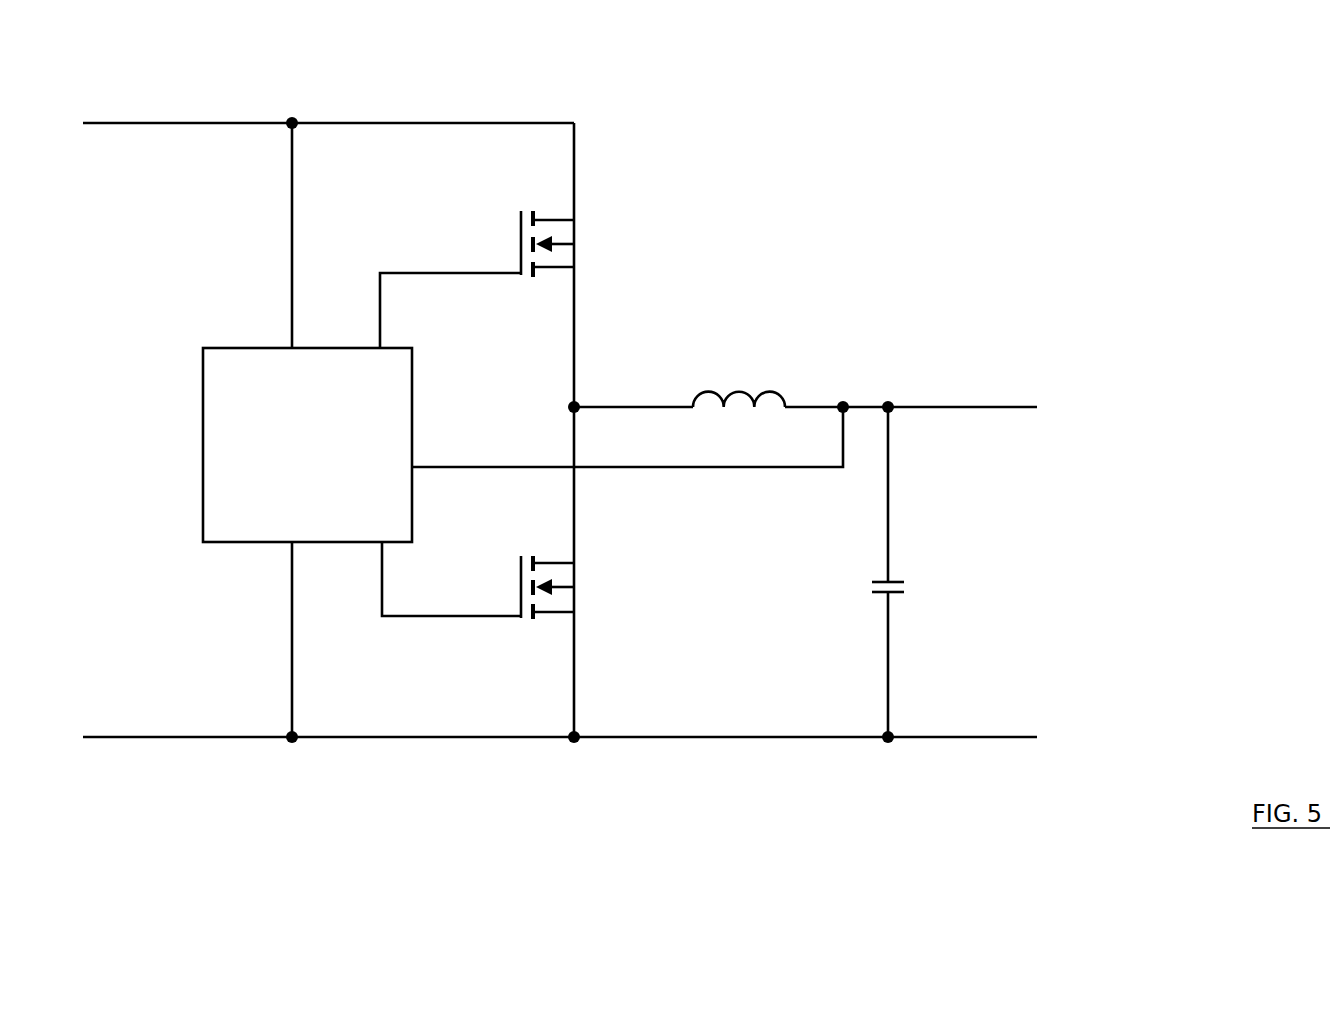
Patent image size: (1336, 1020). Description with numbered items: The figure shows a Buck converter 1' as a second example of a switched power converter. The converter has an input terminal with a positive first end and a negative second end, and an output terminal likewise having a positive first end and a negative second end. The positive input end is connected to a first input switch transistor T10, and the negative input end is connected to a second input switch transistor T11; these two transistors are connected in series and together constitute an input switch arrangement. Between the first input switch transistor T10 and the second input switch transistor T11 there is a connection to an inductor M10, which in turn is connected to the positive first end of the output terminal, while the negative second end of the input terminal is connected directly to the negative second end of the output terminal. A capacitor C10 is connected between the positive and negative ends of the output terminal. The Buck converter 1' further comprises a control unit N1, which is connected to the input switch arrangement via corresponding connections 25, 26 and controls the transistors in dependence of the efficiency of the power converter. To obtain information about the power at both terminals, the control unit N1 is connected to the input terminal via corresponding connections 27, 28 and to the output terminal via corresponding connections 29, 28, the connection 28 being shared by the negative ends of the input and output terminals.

The Buck converter 1' is at (565, 399).
The control unit N1 is at (172, 333).
The connection 25 is at (395, 272).
The connection 26 is at (437, 618).
The connection 27 is at (293, 270).
The connection 28 is at (292, 628).
The connection 29 is at (763, 468).
The first input switch transistor T10 is at (620, 212).
The second input switch transistor T11 is at (603, 572).
The inductor M10 is at (738, 378).
The capacitor C10 is at (932, 558).